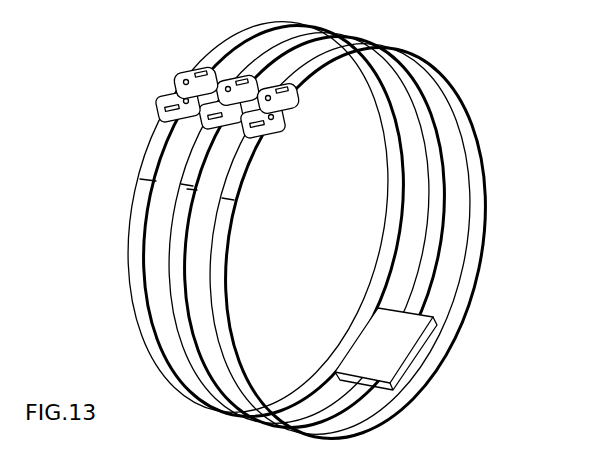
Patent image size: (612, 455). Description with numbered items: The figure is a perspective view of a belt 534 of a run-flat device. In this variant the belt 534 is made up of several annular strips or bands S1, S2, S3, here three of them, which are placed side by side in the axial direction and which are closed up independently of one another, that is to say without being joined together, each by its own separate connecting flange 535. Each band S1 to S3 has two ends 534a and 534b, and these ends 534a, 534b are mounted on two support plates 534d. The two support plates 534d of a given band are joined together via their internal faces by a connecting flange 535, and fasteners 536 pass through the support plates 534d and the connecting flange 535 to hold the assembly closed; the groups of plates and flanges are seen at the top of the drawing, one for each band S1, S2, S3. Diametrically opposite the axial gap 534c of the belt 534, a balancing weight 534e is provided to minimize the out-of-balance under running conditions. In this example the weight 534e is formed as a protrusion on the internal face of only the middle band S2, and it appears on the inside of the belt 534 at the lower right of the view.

The belt 534 is at (288, 227).
The first annular band S1 is at (131, 193).
The middle annular band S2 is at (173, 285).
The third annular band S3 is at (234, 279).
The first band end 534a is at (197, 70).
The second band end 534b is at (170, 113).
The axial gap 534c is at (284, 118).
The support plate 534d is at (297, 90).
The balancing weight 534e is at (392, 352).
The connecting flange 535 is at (170, 150).
The fastener 536 is at (158, 63).